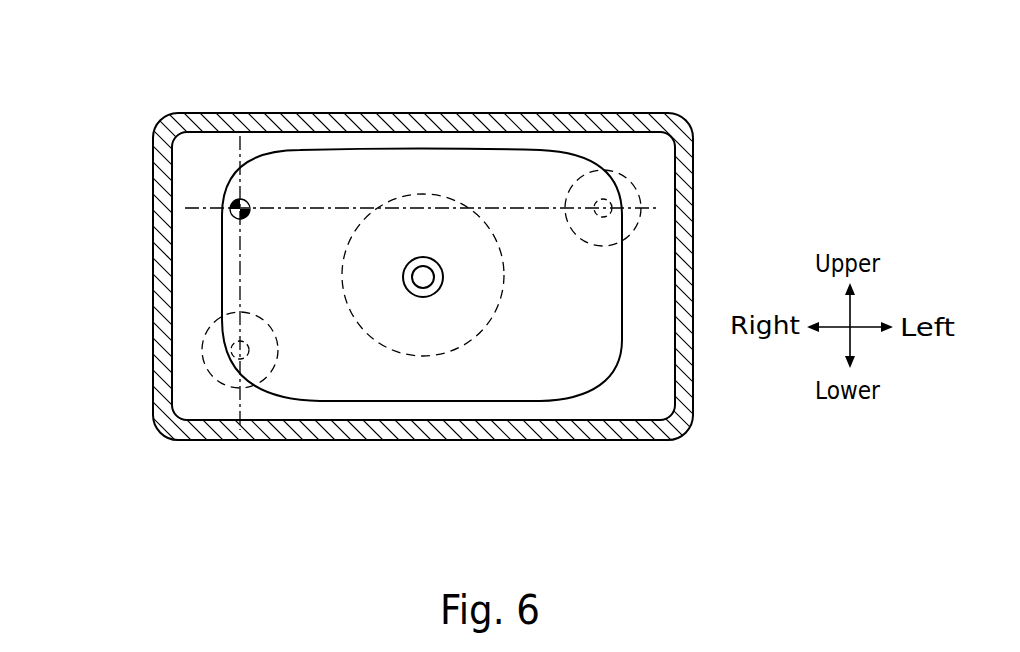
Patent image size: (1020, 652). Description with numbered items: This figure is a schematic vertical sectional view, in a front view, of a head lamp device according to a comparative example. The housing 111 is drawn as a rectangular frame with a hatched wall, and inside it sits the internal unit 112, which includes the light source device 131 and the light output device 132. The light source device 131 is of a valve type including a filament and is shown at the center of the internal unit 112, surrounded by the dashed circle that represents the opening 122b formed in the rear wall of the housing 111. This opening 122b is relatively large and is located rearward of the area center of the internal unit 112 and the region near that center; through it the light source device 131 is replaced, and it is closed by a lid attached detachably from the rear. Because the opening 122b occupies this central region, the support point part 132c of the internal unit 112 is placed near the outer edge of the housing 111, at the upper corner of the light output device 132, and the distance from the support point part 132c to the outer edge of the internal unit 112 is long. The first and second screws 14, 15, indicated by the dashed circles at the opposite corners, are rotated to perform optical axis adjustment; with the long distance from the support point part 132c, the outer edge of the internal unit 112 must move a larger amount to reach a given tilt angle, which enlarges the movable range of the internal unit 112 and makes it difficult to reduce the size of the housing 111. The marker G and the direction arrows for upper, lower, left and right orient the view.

The housing 111 is at (694, 157).
The internal unit 112 is at (626, 275).
The light source device 131 is at (423, 272).
The light output device 132 is at (608, 333).
The support point part 132c is at (228, 224).
The opening 122b is at (472, 338).
The first screw 14 is at (622, 180).
The second screw 15 is at (204, 346).
The center of gravity G is at (242, 199).